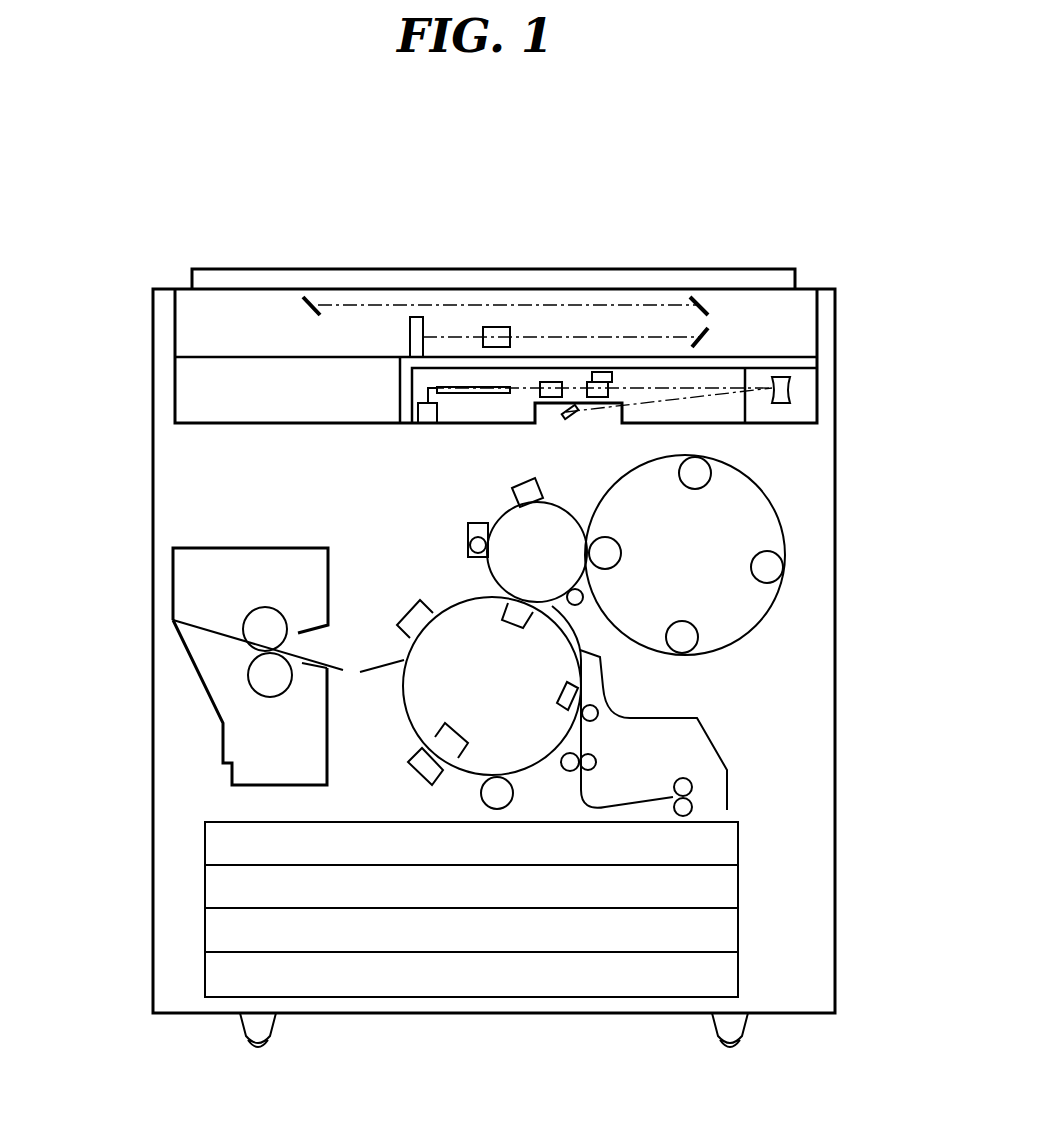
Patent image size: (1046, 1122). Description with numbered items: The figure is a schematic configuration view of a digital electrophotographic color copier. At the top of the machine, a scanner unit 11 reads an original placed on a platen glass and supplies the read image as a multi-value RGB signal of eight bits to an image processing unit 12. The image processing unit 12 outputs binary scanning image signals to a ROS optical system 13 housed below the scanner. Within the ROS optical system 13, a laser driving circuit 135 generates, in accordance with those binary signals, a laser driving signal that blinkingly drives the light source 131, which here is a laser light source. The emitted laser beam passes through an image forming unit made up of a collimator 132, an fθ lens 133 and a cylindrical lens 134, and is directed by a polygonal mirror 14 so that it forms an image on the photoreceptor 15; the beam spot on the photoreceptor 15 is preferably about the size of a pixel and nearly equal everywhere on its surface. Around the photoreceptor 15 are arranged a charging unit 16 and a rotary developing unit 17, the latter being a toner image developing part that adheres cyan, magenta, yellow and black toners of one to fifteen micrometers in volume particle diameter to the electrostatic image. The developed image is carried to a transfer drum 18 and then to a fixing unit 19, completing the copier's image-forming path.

The scanner unit 11 is at (745, 320).
The image processing unit 12 is at (190, 393).
The ROS optical system 13 is at (732, 366).
The light source 131 is at (470, 386).
The collimator 132 is at (551, 382).
The fθ lens 133 is at (600, 372).
The cylindrical lens 134 is at (790, 390).
The laser driving circuit 135 is at (427, 424).
The polygonal mirror 14 is at (566, 420).
The photoreceptor 15 is at (555, 527).
The charging unit 16 is at (512, 490).
The rotary developing unit 17 is at (773, 528).
The transfer drum 18 is at (418, 703).
The fixing unit 19 is at (190, 578).